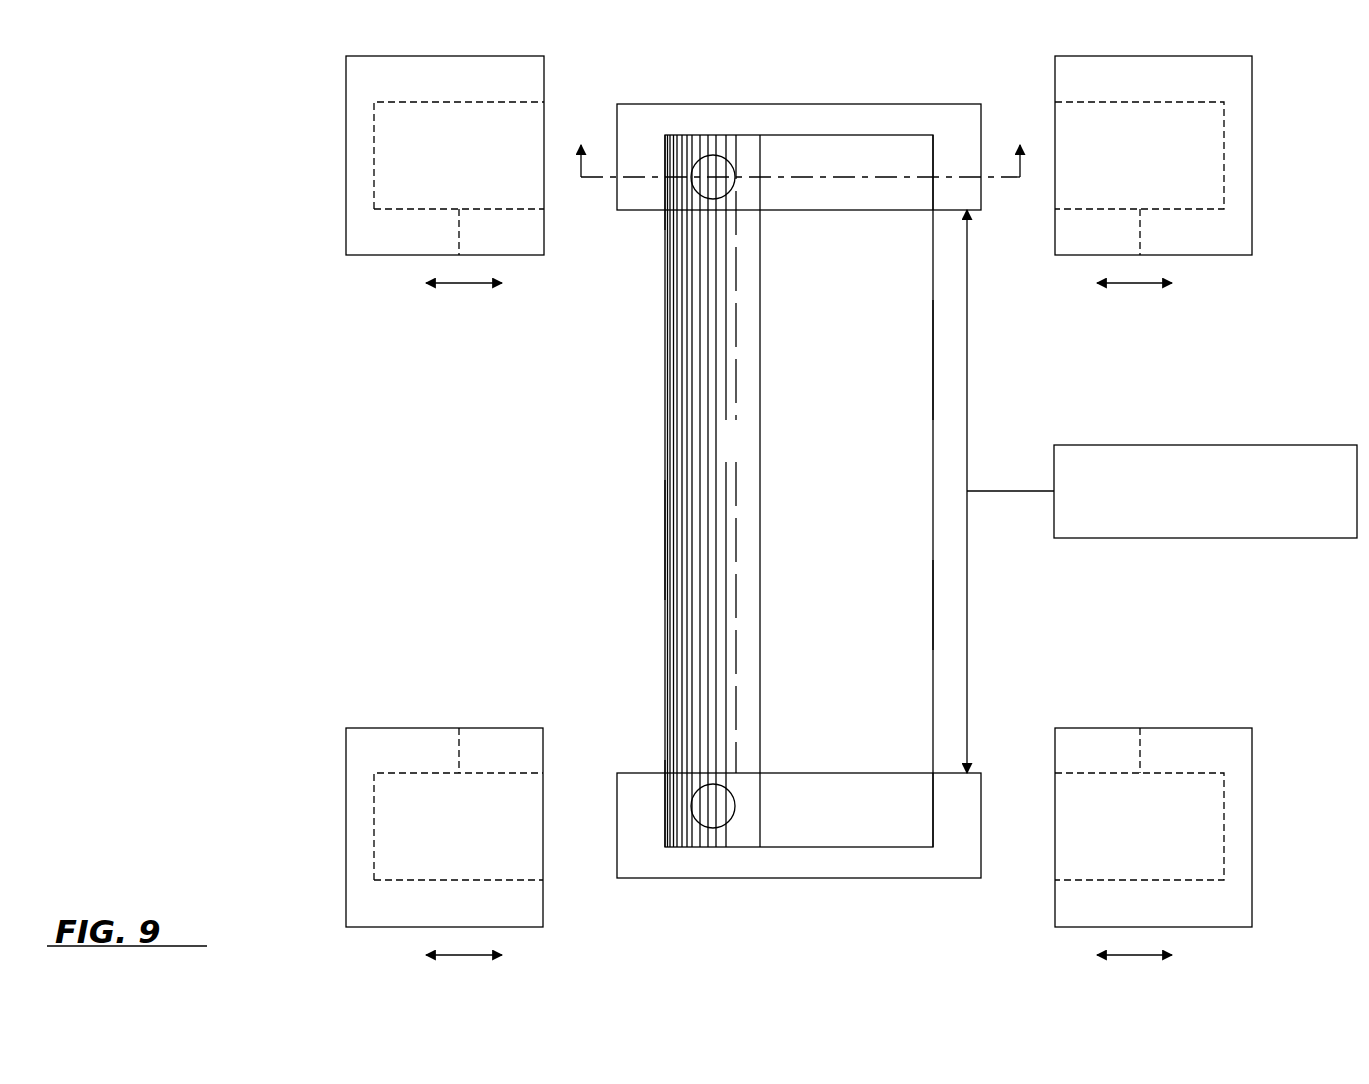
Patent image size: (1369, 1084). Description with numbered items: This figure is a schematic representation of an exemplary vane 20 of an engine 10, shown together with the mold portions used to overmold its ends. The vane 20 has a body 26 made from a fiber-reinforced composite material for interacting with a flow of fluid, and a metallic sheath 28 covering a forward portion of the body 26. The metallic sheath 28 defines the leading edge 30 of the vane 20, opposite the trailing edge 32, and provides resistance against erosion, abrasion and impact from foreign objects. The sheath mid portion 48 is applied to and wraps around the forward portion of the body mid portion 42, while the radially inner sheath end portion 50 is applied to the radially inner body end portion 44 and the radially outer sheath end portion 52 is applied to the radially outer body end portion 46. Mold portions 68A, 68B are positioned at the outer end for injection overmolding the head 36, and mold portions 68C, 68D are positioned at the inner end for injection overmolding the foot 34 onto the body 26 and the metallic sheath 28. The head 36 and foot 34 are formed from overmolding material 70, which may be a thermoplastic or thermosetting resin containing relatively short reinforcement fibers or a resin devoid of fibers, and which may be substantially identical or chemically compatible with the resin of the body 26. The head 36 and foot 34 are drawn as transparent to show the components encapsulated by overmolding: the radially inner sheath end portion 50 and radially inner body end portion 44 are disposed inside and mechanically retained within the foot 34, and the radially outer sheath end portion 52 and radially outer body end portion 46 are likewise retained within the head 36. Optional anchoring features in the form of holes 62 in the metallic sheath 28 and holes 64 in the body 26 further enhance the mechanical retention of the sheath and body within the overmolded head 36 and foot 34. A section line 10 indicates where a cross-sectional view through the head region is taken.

The engine 10 is at (798, 144).
The vane 20 is at (372, 450).
The body 26 is at (830, 455).
The metallic sheath 28 is at (662, 491).
The leading edge 30 is at (660, 540).
The trailing edge 32 is at (933, 600).
The foot 34 is at (819, 860).
The head 36 is at (819, 121).
The body mid portion 42 is at (900, 342).
The radially inner body end portion 44 is at (907, 820).
The radially outer body end portion 46 is at (907, 163).
The sheath mid portion 48 is at (700, 360).
The radially inner sheath end portion 50 is at (680, 787).
The radially outer sheath end portion 52 is at (679, 197).
The holes 62 is at (707, 495).
The holes 64 is at (712, 162).
The mold portion 68A is at (358, 144).
The mold portion 68B is at (1238, 168).
The mold portion 68C is at (360, 816).
The mold portion 68D is at (1238, 828).
The overmolding material 70 is at (1214, 538).